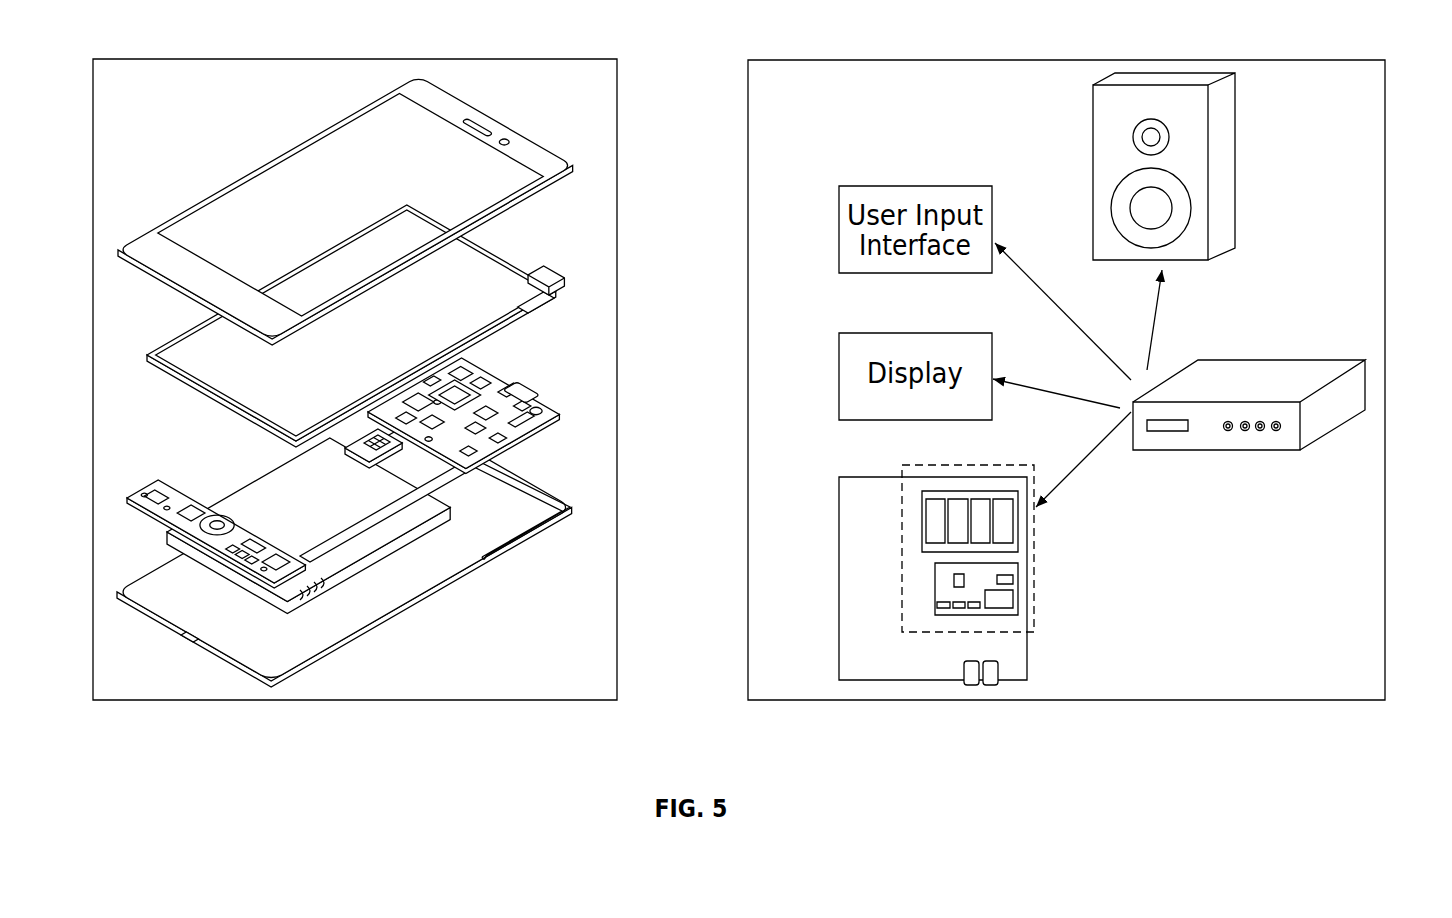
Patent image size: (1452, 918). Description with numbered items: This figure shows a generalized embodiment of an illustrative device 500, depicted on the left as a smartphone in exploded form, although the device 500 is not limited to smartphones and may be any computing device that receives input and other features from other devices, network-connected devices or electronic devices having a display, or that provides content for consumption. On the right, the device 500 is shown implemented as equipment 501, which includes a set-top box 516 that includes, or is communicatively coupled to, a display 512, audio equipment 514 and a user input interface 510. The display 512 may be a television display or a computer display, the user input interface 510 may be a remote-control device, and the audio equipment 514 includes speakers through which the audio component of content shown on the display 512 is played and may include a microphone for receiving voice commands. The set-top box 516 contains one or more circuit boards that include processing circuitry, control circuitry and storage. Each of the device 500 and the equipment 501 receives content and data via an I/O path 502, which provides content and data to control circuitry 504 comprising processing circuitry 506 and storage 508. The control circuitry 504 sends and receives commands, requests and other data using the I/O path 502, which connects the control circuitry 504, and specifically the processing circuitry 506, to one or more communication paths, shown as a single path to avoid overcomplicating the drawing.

The device 500 is at (190, 58).
The equipment 501 is at (1302, 60).
The I/O path 502 is at (201, 542).
The control circuitry 504 is at (902, 598).
The processing circuitry 506 is at (935, 577).
The storage 508 is at (922, 520).
The user input interface 510 is at (838, 228).
The display 512 is at (838, 344).
The audio equipment 514 is at (1093, 172).
The set-top box 516 is at (1238, 360).